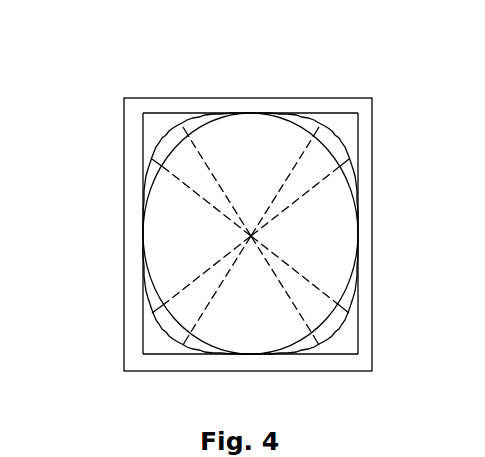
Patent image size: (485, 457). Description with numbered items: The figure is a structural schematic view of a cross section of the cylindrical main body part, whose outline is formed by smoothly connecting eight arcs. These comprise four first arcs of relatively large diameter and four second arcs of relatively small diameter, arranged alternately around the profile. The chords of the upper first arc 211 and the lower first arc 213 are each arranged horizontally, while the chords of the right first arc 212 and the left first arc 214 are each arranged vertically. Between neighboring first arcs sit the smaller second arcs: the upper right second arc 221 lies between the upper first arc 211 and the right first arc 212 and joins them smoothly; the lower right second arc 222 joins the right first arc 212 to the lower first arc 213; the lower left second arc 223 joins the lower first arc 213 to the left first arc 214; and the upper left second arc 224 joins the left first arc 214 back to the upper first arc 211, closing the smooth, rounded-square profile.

The upper first arc 211 is at (258, 113).
The right first arc 212 is at (358, 232).
The lower first arc 213 is at (250, 353).
The left first arc 214 is at (145, 215).
The upper right second arc 221 is at (336, 134).
The lower right second arc 222 is at (343, 313).
The lower left second arc 223 is at (163, 328).
The upper left second arc 224 is at (182, 129).